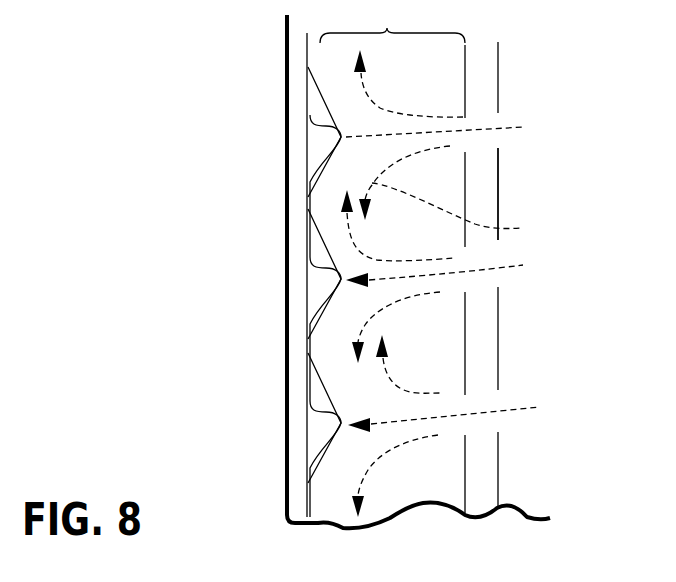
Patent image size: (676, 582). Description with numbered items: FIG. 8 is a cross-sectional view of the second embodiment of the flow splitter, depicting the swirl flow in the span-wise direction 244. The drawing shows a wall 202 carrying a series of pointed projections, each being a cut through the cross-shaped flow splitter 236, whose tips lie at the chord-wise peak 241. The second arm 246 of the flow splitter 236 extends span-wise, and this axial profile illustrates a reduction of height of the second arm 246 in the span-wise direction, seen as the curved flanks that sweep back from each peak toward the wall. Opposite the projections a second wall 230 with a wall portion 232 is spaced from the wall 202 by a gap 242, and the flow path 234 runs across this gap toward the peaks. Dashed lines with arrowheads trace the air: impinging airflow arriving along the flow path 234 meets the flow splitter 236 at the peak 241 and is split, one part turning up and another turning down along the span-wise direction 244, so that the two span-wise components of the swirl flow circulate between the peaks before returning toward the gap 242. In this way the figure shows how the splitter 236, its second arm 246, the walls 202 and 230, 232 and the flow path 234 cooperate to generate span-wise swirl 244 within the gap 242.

The plate 202 is at (298, 88).
The second plate 230 is at (482, 72).
The second plate wall portion 232 is at (497, 142).
The flow path 234 is at (510, 127).
The cross-shaped flow splitter 236 is at (313, 142).
The chord-wise peak 241 is at (340, 280).
The gap 242 is at (392, 22).
The span-wise direction 244 is at (465, 212).
The second arm 246 is at (315, 158).